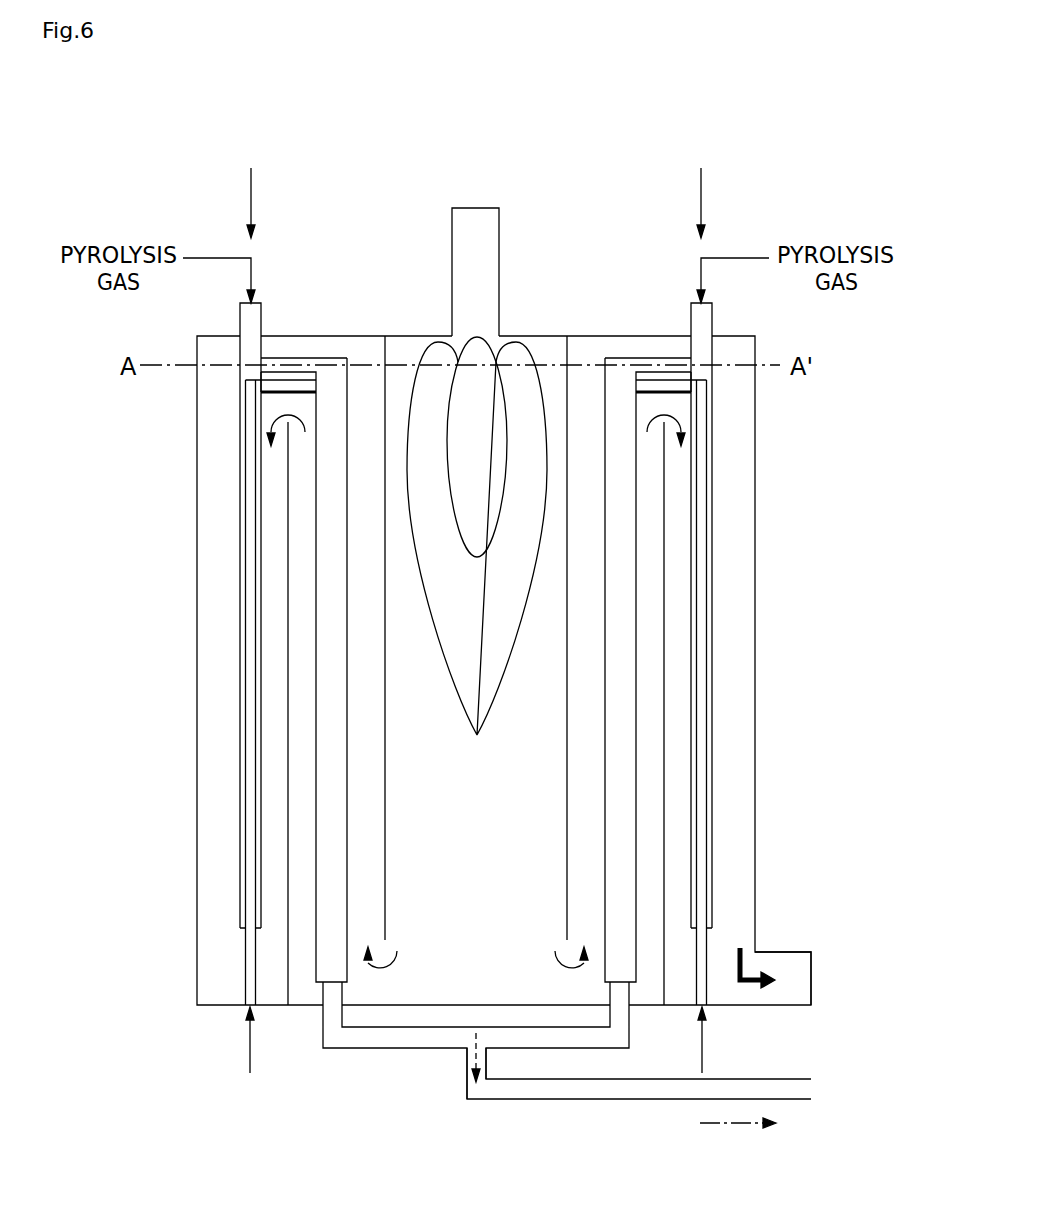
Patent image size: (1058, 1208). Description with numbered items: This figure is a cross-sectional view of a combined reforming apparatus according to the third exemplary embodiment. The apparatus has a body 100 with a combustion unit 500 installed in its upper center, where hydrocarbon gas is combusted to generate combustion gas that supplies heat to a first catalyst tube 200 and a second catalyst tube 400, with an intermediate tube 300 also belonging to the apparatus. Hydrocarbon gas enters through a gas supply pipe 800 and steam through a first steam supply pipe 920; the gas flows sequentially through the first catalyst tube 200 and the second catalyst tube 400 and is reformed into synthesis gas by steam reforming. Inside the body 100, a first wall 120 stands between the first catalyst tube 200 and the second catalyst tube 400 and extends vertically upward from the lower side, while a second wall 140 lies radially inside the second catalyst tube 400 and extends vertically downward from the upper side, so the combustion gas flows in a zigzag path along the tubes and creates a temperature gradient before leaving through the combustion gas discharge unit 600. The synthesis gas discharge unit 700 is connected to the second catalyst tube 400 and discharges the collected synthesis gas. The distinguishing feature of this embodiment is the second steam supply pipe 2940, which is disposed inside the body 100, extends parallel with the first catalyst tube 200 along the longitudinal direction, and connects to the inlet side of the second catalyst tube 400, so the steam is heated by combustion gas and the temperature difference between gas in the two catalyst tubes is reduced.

The body 100 is at (764, 522).
The first wall 120 is at (288, 767).
The second wall 140 is at (384, 577).
The first catalyst tube 200 is at (712, 652).
The intermediate tube 300 is at (264, 378).
The second catalyst tube 400 is at (312, 663).
The combustion unit 500 is at (449, 198).
The combustion gas discharge unit 600 is at (818, 940).
The synthesis gas discharge unit 700 is at (447, 1094).
The gas supply pipe 800 is at (212, 260).
The first steam supply pipe 920 is at (254, 195).
The second steam supply pipe 2940 is at (245, 958).